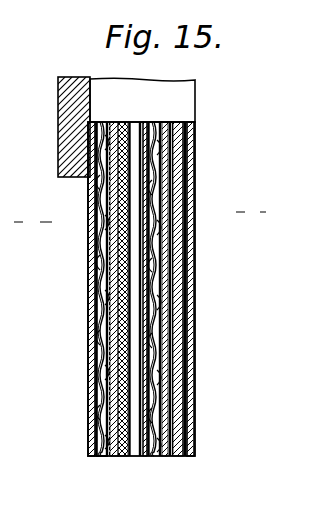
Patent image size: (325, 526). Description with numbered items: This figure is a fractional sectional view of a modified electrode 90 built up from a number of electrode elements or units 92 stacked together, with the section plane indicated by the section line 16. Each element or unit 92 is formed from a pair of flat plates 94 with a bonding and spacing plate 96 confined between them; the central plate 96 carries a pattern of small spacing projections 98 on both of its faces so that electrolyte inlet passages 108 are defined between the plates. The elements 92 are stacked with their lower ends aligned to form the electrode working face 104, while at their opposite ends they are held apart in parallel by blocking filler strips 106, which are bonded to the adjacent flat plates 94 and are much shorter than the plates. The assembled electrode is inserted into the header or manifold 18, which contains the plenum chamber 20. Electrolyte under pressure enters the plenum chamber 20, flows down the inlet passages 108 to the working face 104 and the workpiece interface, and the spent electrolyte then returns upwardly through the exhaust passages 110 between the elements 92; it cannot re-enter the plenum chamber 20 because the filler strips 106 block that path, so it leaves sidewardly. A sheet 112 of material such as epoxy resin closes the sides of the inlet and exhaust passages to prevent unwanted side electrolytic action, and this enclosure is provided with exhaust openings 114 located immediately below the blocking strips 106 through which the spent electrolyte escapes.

The section line 16- 16 is at (32, 190).
The header or manifold 18 is at (60, 90).
The plenum chamber 20 is at (172, 100).
The electrode 90 is at (84, 363).
The electrode element or unit 92 is at (88, 451).
The flat plate 94 is at (108, 407).
The bonding and spacing plate 96 is at (97, 313).
The spacing projection 98 is at (100, 272).
The electrode working face 104 is at (98, 458).
The blocking filler strip 106 is at (150, 122).
The inlet passage 108 is at (112, 222).
The outlet or exhaust passage 110 is at (150, 362).
The sheet 112 is at (150, 416).
The exhaust or outlet opening 114 is at (150, 242).